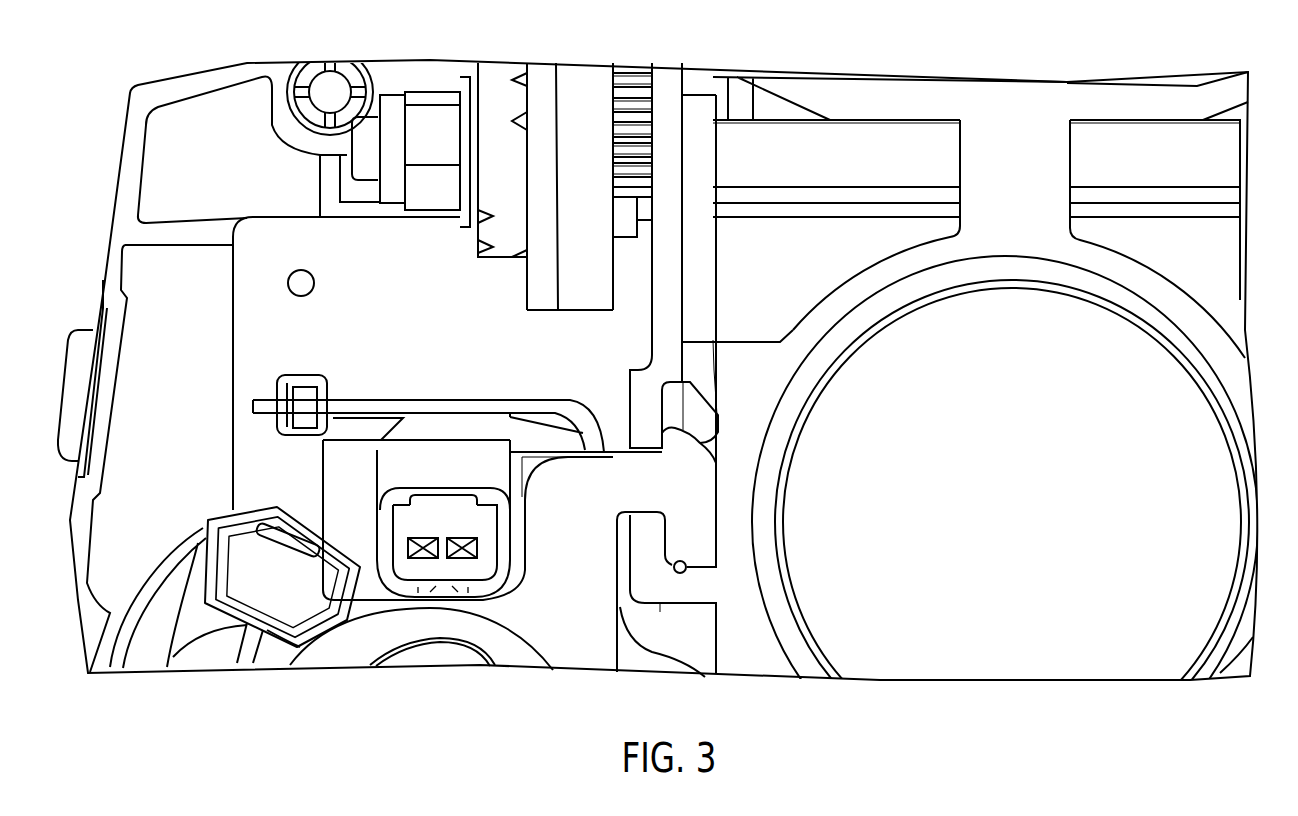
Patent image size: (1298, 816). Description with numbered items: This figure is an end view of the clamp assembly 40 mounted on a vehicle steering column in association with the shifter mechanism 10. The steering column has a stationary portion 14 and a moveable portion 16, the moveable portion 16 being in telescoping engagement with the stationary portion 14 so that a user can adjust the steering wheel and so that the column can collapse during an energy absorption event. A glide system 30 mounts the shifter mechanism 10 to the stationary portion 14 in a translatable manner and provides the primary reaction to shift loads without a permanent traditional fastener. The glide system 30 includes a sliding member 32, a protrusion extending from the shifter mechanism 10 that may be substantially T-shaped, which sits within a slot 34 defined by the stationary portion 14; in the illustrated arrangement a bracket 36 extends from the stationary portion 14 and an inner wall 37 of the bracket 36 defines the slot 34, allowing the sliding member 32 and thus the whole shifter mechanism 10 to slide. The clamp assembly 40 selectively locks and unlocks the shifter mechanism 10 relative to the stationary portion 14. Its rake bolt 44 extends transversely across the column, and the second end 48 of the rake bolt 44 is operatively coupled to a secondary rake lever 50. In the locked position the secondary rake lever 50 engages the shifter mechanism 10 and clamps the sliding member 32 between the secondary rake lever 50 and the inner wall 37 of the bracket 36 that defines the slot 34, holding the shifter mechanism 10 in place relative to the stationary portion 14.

The shifter mechanism 10 is at (342, 652).
The stationary portion 14 is at (915, 97).
The moveable portion 16 is at (1223, 652).
The glide system 30 is at (687, 619).
The sliding member 32 is at (688, 513).
The slot 34 is at (700, 560).
The bracket 36 is at (637, 577).
The inner wall 37 is at (680, 573).
The clamp assembly 40 is at (773, 63).
The rake bolt 44 is at (1225, 155).
The second end 48 is at (367, 133).
The secondary rake lever 50 is at (693, 130).